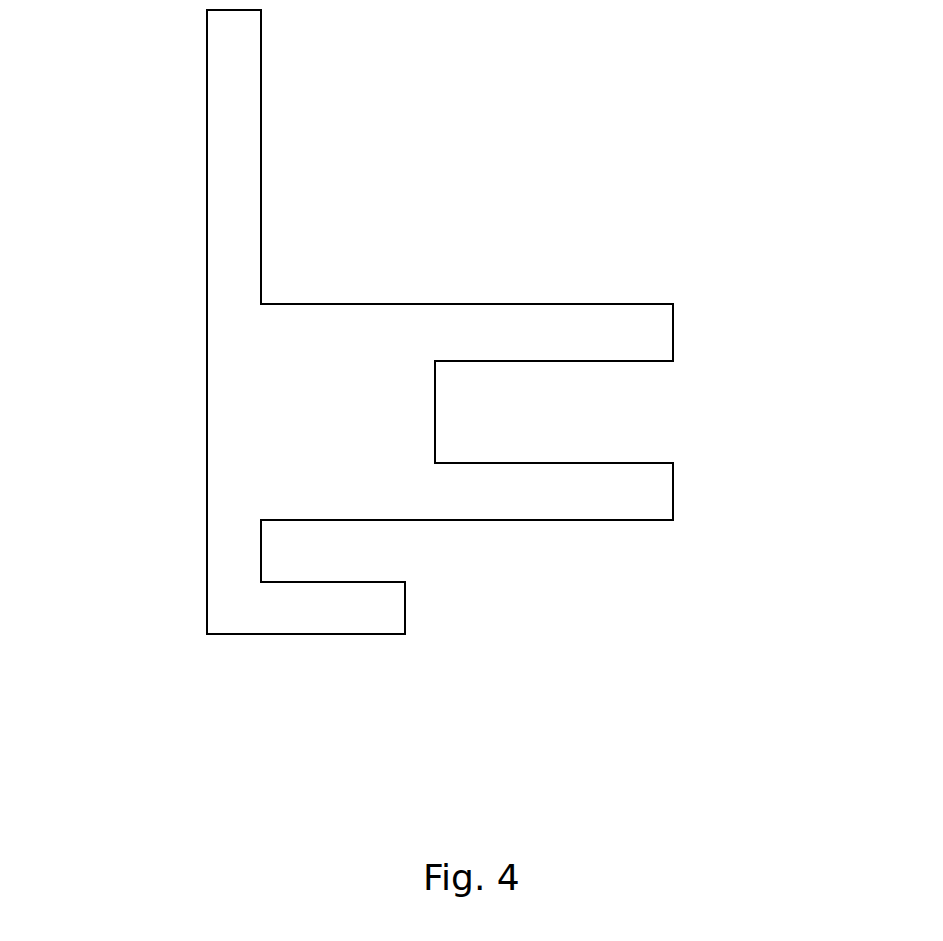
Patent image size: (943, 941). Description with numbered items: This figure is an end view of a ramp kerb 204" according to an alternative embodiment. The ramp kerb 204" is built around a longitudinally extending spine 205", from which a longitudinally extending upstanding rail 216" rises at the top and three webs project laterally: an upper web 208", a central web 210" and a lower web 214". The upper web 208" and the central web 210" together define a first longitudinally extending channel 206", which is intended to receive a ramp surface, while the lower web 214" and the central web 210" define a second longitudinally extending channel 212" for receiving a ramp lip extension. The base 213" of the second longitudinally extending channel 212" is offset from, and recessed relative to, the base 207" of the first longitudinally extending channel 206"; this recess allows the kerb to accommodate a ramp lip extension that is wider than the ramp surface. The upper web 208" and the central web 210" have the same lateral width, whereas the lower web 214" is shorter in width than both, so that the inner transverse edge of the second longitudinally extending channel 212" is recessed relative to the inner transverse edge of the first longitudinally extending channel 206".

The ramp kerb 204 is at (462, 126).
The longitudinally extending upstanding rail 216 is at (207, 133).
The upper web 208 is at (455, 330).
The first longitudinally extending channel 206 is at (562, 392).
The base of the first longitudinally extending channel 207 is at (435, 390).
The longitudinally extending spine 205 is at (207, 487).
The central web 210 is at (633, 501).
The second longitudinally extending channel 212 is at (408, 558).
The base of the second longitudinally extending channel 213 is at (259, 558).
The lower web 214 is at (295, 607).